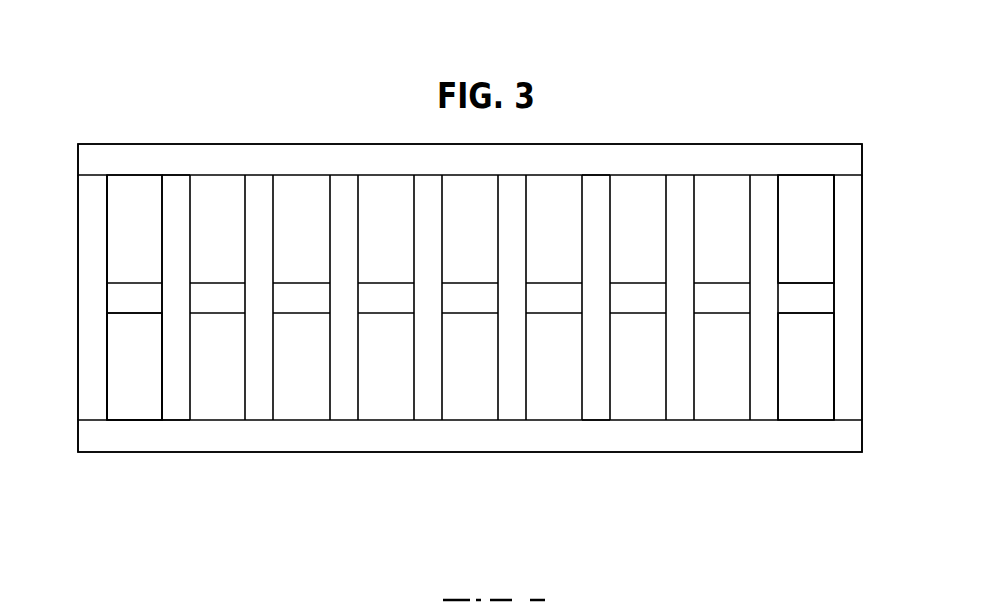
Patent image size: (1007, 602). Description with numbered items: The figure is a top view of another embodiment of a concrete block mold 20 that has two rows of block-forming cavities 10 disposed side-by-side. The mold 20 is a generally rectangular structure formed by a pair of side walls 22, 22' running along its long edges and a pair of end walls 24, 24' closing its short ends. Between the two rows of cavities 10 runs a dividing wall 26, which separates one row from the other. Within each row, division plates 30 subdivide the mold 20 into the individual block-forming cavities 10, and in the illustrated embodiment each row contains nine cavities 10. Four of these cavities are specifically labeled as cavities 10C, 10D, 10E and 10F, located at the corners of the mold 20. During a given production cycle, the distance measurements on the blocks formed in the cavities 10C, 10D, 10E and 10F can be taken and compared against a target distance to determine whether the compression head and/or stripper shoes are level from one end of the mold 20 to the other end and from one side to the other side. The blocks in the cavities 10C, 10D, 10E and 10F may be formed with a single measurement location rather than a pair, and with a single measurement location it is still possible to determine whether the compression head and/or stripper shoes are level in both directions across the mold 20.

The block-forming cavities 10 is at (228, 188).
The block-forming cavity 10C is at (144, 188).
The block-forming cavity 10D is at (140, 410).
The block-forming cavity 10E is at (795, 185).
The block-forming cavity 10F is at (798, 408).
The mold 20 is at (244, 512).
The side wall 22 is at (470, 132).
The side wall 22' is at (470, 462).
The end wall 24 is at (73, 297).
The end wall 24' is at (867, 297).
The dividing wall 26 is at (293, 293).
The division plates 30 is at (347, 410).